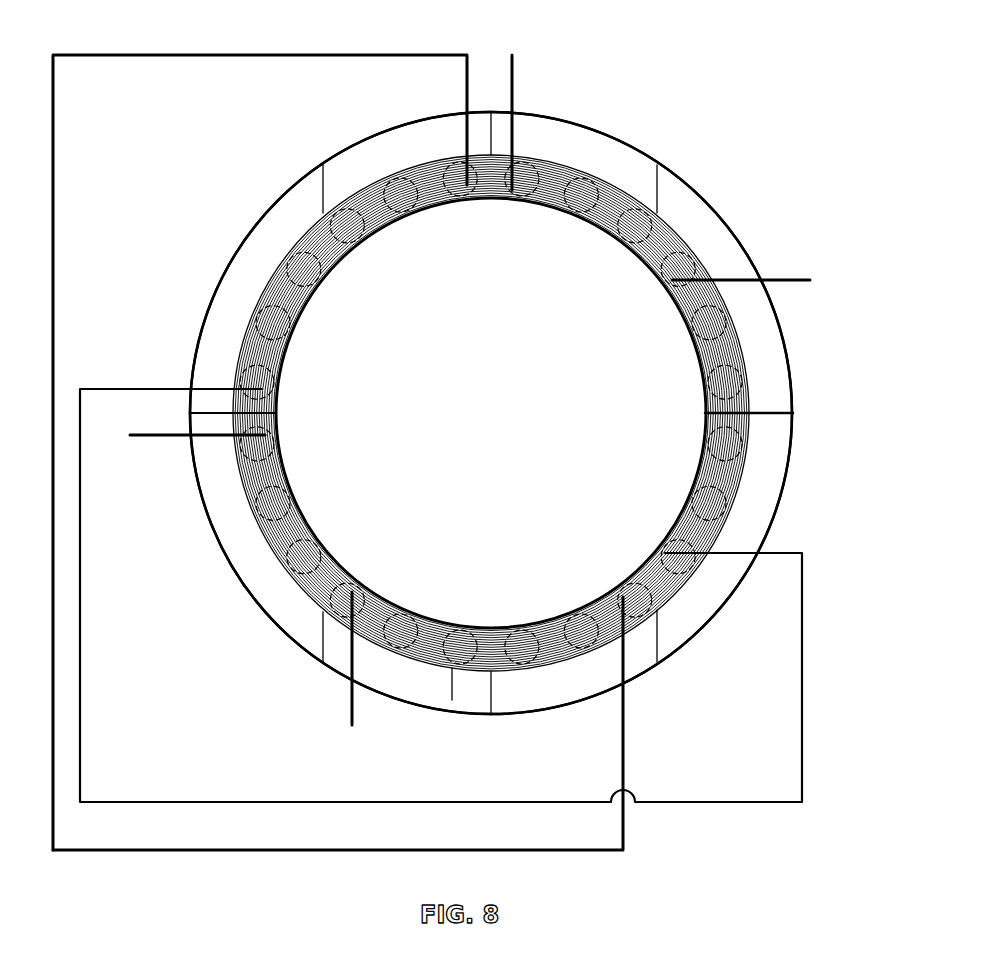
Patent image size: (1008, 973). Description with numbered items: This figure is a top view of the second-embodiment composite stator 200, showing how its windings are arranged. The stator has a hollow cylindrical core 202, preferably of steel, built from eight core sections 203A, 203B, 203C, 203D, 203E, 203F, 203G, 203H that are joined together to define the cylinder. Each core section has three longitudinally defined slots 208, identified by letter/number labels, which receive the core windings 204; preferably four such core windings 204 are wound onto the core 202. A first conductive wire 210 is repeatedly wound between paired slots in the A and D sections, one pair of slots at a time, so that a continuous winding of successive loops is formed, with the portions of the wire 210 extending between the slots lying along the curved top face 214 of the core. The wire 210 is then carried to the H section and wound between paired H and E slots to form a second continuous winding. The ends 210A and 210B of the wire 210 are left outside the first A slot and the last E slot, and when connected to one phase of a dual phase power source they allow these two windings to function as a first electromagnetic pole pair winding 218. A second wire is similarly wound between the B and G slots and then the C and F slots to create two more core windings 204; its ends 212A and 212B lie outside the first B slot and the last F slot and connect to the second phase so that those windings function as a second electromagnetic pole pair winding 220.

The composite stator 200 is at (220, 157).
The core 202 is at (771, 525).
The core section 203A is at (583, 118).
The core section 203B is at (743, 244).
The core section 203C is at (793, 458).
The core section 203D is at (646, 676).
The core section 203E is at (335, 675).
The core section 203F is at (209, 524).
The core section 203G is at (209, 305).
The core section 203H is at (355, 144).
The core winding 204 is at (478, 135).
The slot 208 is at (428, 220).
The conductive wire 210 is at (452, 700).
The end of wire 210A is at (515, 97).
The end of wire 210B is at (360, 690).
The end of second wire 212A is at (779, 293).
The end of second wire 212B is at (180, 461).
The curved top face 214 is at (620, 157).
The first electromagnetic pole pair winding 218 is at (215, 402).
The second electromagnetic pole pair winding 220 is at (440, 167).